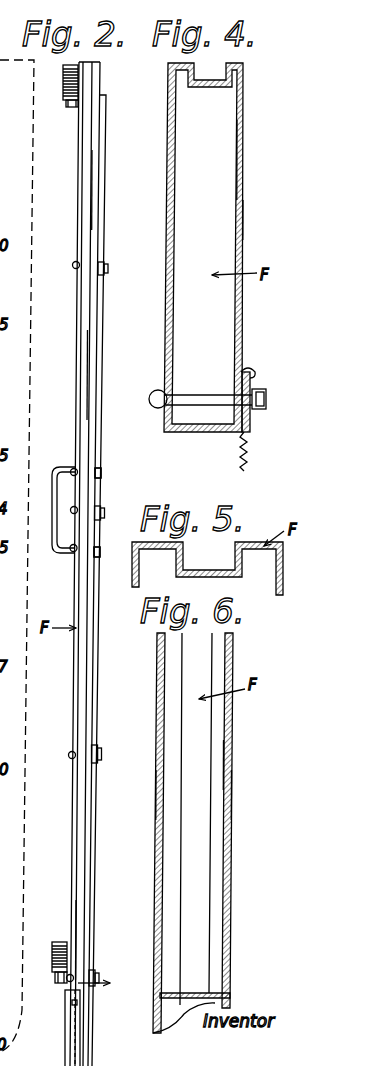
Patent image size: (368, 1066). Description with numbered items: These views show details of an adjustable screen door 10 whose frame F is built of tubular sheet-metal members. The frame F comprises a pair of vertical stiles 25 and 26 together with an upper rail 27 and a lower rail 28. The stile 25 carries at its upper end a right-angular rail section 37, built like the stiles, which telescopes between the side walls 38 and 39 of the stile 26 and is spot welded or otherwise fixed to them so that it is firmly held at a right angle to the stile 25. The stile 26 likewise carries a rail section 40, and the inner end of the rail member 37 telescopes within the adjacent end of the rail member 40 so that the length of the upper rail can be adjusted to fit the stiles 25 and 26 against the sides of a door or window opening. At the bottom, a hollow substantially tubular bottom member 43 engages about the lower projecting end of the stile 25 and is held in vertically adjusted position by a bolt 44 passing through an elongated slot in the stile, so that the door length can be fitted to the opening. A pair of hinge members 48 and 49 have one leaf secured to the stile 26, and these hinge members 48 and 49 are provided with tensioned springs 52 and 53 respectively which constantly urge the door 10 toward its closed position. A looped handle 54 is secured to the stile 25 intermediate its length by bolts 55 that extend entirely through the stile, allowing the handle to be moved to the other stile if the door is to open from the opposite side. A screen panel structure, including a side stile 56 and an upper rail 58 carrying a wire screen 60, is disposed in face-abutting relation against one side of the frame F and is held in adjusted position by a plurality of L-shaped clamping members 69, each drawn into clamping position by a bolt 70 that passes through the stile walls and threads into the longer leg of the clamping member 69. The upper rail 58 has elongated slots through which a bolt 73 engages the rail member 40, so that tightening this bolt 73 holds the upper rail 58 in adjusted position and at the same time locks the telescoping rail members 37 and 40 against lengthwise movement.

In FIG. 2, the bar assembly 10 is at (105, 1022).
In FIG. 2, the vertical stile 25 is at (87, 380).
In FIG. 6, the vertical stile 26 is at (216, 1003).
In FIG. 2, the upper rail 27 is at (101, 75).
In FIG. 4, the upper rail 27 is at (244, 118).
In FIG. 6, the upper rail 27 is at (230, 739).
In FIG. 2, the lower rail 28 is at (80, 966).
In FIG. 4, the rail section 37 is at (218, 168).
In FIG. 6, the rail section 37 is at (224, 758).
In FIG. 6, the side wall 38 is at (156, 792).
In FIG. 6, the side wall 39 is at (233, 794).
In FIG. 4, the rail section 40 is at (242, 221).
In FIG. 2, the bottom member 43 is at (70, 1050).
In FIG. 2, the bolt 44 is at (74, 1034).
In FIG. 2, the hinge member 48 is at (70, 104).
In FIG. 2, the hinge member 49 is at (57, 944).
In FIG. 2, the tensioned spring 52 is at (62, 77).
In FIG. 2, the tensioned spring 53 is at (58, 979).
In FIG. 2, the looped handle 54 is at (60, 548).
In FIG. 2, the bolt 55 is at (101, 473).
In FIG. 2, the side stile 56 is at (101, 196).
In FIG. 2, the upper rail 58 is at (106, 100).
In FIG. 4, the upper rail 58 is at (256, 372).
In FIG. 4, the wire screen 60 is at (246, 456).
In FIG. 2, the L-shaped clamping member 69 is at (101, 288).
In FIG. 2, the bolt 70 is at (77, 269).
In FIG. 4, the bolt 73 is at (208, 386).